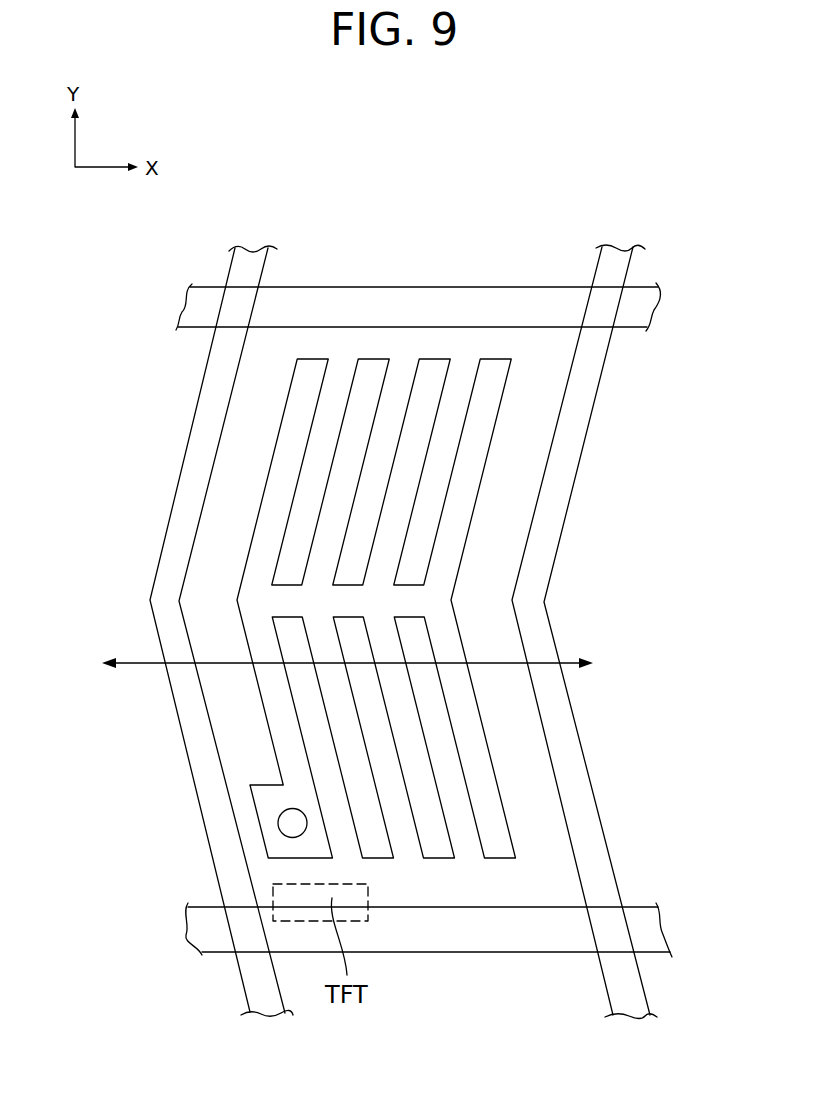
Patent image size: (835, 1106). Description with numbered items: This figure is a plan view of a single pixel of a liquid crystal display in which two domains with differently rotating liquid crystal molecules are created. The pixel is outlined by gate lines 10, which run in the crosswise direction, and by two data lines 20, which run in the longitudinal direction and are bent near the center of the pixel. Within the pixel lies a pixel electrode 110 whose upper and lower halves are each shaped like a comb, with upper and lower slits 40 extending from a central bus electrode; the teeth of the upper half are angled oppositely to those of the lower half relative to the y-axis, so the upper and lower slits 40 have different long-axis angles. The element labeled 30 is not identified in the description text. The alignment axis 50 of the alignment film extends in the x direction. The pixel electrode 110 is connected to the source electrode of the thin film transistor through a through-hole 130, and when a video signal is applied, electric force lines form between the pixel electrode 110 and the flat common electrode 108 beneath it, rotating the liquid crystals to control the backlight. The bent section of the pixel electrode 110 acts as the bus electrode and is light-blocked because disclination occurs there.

The gate line 10 is at (487, 937).
The data line 20 is at (550, 535).
The pixel electrode 30 is at (498, 718).
The slit 40 is at (450, 777).
The alignment axis 50 is at (140, 663).
The common electrode 108 is at (552, 862).
The pixel electrode 110 is at (487, 820).
The through-hole 130 is at (290, 823).